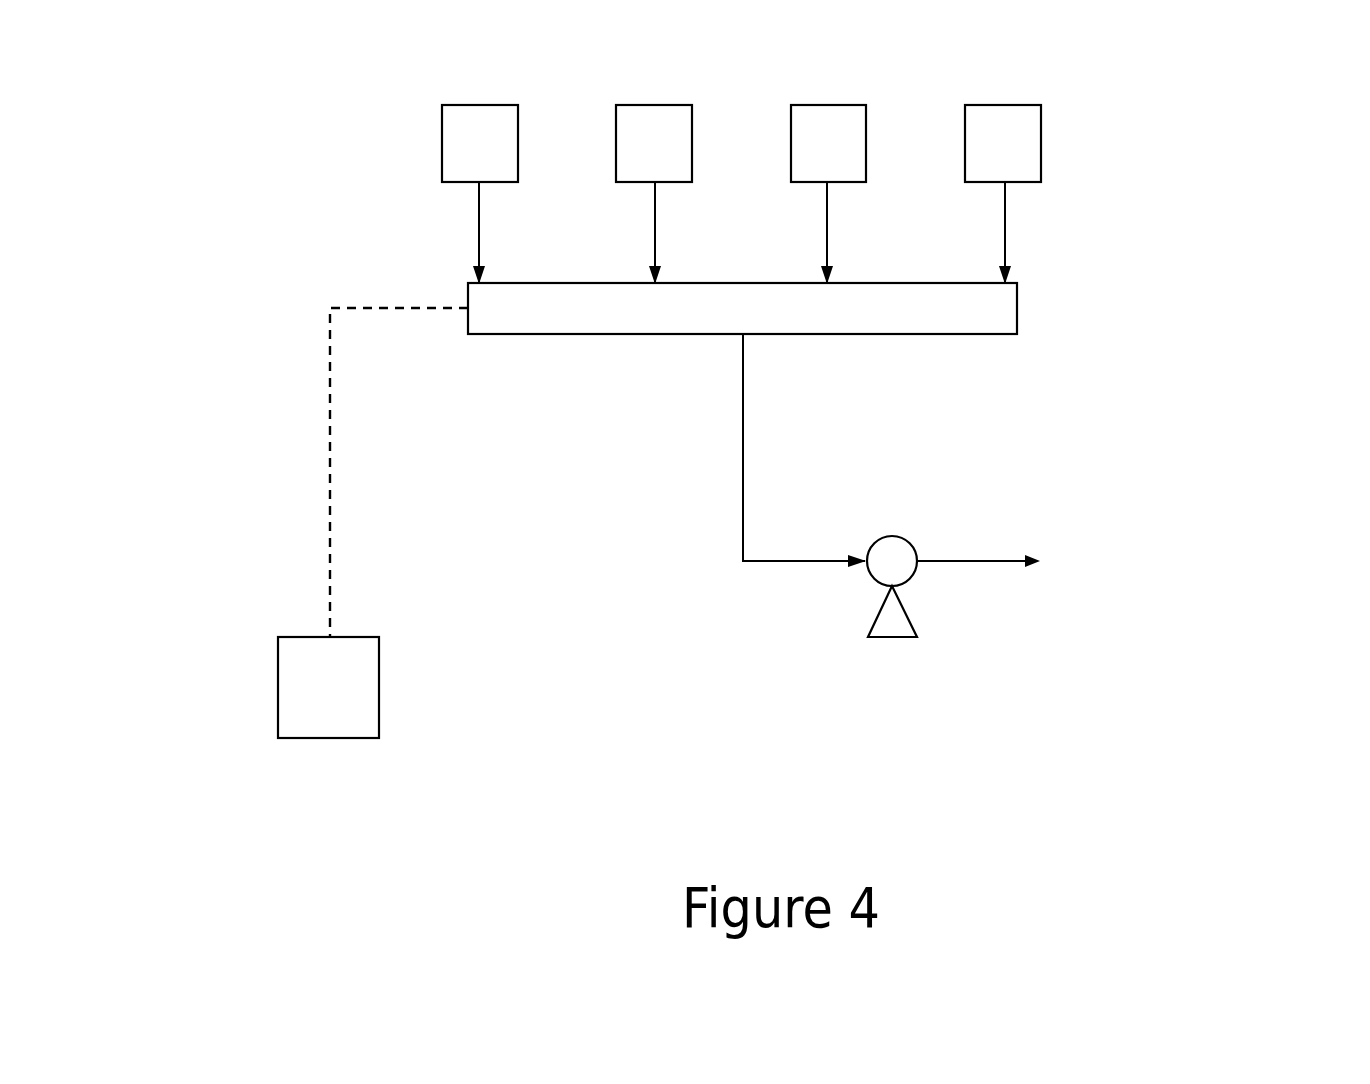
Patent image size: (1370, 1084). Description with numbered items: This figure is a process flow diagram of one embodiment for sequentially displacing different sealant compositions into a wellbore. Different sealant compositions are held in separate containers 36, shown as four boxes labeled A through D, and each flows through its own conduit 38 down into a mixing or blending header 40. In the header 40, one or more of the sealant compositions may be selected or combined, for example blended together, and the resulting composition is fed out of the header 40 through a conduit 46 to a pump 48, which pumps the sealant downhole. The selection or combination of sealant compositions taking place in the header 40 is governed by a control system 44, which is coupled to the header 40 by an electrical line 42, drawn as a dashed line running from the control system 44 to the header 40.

The containers 36 is at (1117, 138).
The conduits 38 is at (1077, 240).
The mixing or blending header 40 is at (766, 323).
The electrical line 42 is at (343, 472).
The control system 44 is at (308, 710).
The conduit 46 is at (791, 497).
The pump 48 is at (953, 539).